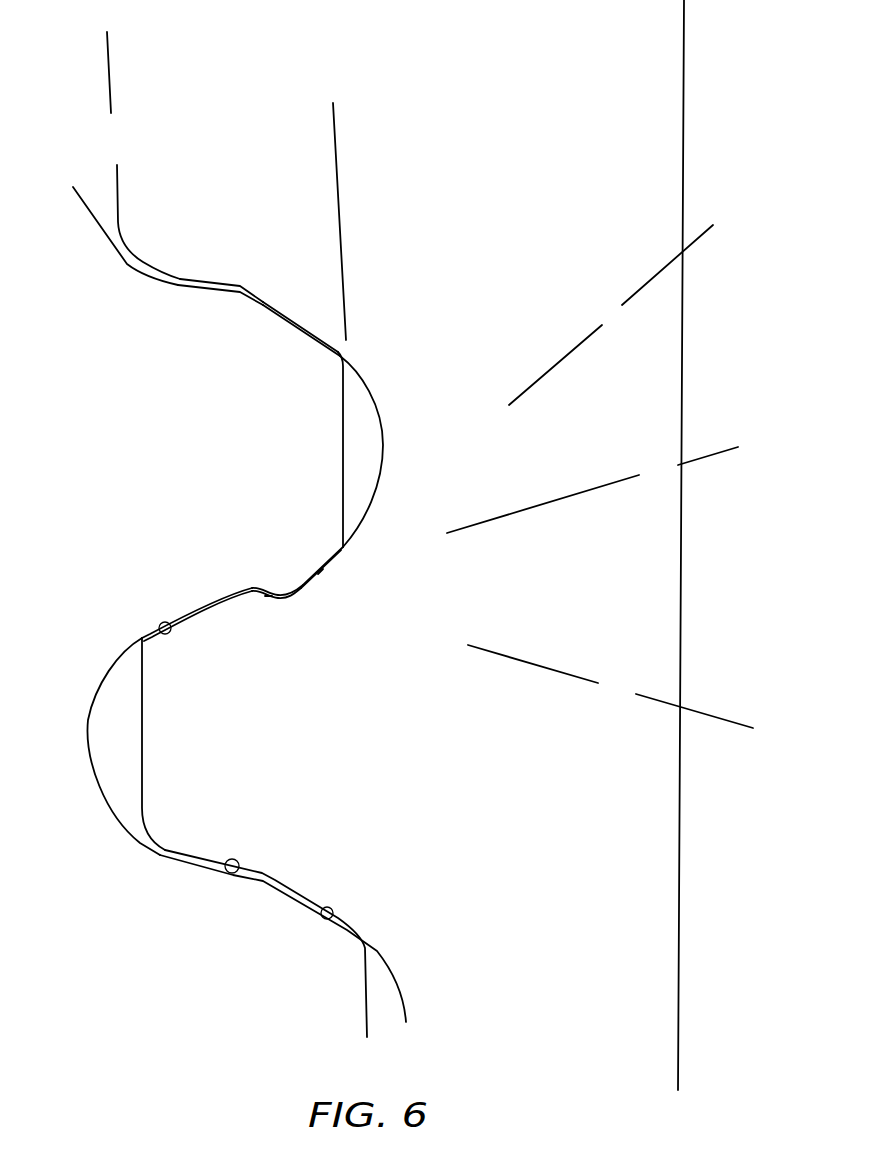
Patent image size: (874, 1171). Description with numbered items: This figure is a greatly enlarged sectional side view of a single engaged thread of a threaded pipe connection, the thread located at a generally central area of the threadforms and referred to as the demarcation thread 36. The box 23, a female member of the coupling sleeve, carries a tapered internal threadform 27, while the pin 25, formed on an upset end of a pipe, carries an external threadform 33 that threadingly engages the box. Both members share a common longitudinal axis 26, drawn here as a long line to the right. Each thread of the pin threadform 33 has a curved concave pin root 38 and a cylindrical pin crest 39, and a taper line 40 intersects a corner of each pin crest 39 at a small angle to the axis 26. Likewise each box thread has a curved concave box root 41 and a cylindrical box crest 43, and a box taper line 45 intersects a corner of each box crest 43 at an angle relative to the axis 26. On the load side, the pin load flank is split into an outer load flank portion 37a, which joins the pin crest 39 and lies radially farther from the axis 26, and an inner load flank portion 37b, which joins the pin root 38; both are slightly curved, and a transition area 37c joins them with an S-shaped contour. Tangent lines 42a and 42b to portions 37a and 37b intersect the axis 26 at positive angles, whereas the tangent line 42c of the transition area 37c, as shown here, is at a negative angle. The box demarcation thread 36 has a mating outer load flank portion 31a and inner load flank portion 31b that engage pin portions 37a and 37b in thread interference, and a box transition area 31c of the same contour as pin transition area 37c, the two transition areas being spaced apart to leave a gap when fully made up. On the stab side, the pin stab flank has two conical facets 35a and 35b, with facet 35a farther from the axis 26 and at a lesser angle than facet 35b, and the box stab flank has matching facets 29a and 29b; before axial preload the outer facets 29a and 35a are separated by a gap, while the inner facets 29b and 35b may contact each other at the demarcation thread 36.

The box 23 is at (107, 378).
The pin 25 is at (455, 378).
The longitudinal axis 26 is at (682, 980).
The internal threadform 27 is at (114, 226).
The box outer stab flank facet 29a is at (226, 866).
The box inner stab flank facet 29b is at (322, 913).
The box outer load flank portion 31a is at (158, 625).
The box inner load flank portion 31b is at (320, 573).
The box transition area 31c is at (267, 598).
The external threadform 33 is at (108, 198).
The pin outer stab flank facet 35a is at (173, 270).
The pin inner stab flank facet 35b is at (291, 327).
The demarcation thread 36 is at (104, 460).
The pin outer load flank portion 37a is at (208, 600).
The pin inner load flank portion 37b is at (333, 555).
The pin transition area 37c is at (273, 591).
The pin root 38 is at (92, 753).
The pin crest 39 is at (346, 467).
The taper line 40 is at (110, 75).
The box root 41 is at (378, 432).
The tangent line 42a is at (702, 458).
The tangent line 42b is at (702, 238).
The tangent line 42c is at (713, 718).
The box crest 43 is at (140, 698).
The box taper line 45 is at (337, 157).